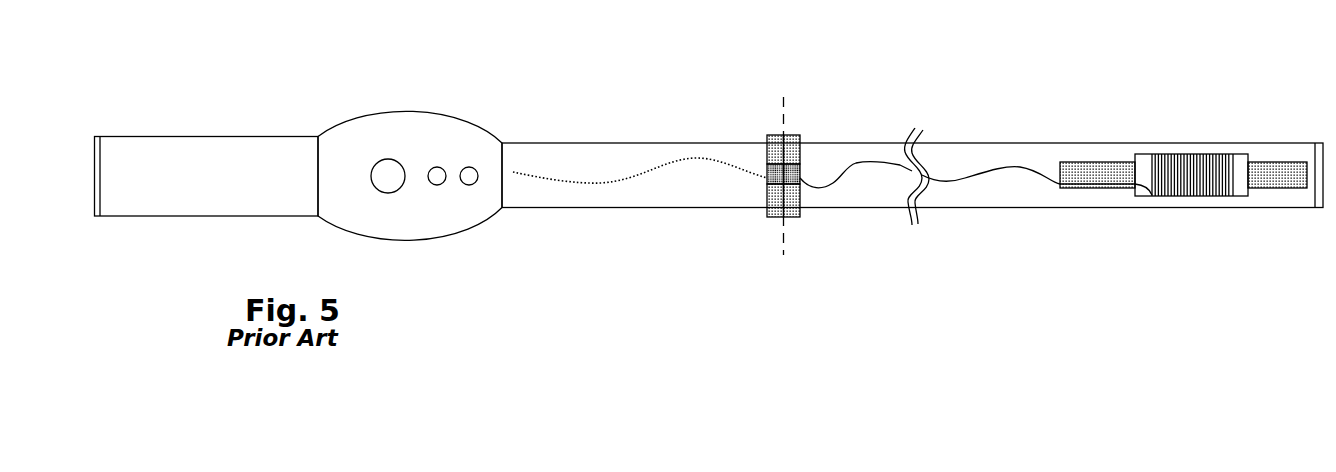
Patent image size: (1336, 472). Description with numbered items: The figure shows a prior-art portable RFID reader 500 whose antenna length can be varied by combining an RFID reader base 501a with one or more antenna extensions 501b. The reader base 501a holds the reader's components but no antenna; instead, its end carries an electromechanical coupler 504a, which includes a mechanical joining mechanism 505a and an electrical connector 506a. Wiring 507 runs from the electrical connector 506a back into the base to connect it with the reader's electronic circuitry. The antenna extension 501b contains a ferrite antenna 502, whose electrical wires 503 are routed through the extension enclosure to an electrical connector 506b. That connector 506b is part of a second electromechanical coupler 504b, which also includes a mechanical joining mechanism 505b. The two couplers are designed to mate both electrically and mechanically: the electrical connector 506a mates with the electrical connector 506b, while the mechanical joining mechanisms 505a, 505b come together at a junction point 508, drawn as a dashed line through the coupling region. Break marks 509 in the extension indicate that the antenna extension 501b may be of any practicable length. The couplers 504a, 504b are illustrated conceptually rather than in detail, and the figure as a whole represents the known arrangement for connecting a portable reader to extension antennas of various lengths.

The portable RFID reader 500 is at (1108, 266).
The RFID reader base 501a is at (557, 217).
The antenna extension 501b is at (1018, 218).
The ferrite antenna 502 is at (1207, 150).
The electrical wires 503 is at (980, 170).
The electromechanical coupler 504a is at (772, 120).
The electromechanical coupler 504b is at (793, 117).
The mechanical joining mechanism 505a is at (760, 137).
The mechanical joining mechanism 505b is at (803, 132).
The electrical connector 506a is at (758, 183).
The electrical connector 506b is at (803, 180).
The wiring 507 is at (605, 192).
The junction point 508 is at (787, 265).
The break lines 509 is at (925, 132).